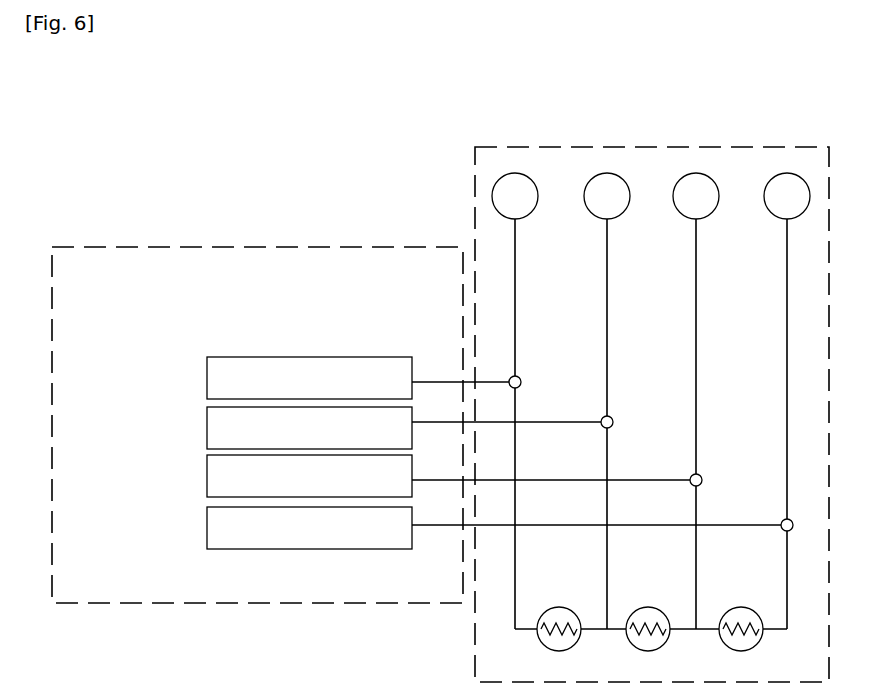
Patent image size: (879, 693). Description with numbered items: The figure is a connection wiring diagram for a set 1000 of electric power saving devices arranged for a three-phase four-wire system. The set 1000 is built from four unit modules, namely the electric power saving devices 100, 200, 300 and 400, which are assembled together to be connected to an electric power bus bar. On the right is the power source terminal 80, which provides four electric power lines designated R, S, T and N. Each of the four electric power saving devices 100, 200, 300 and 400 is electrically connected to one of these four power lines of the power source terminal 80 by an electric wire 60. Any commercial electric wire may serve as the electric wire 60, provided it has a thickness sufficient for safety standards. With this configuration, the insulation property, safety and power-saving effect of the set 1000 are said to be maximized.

The set of electric power saving devices 1000 is at (139, 247).
The power source terminal 80 is at (667, 145).
The electric power saving device 100 is at (196, 375).
The electric power saving device 200 is at (196, 428).
The electric power saving device 300 is at (196, 479).
The electric power saving device 400 is at (196, 529).
The electric wire 60 is at (432, 420).